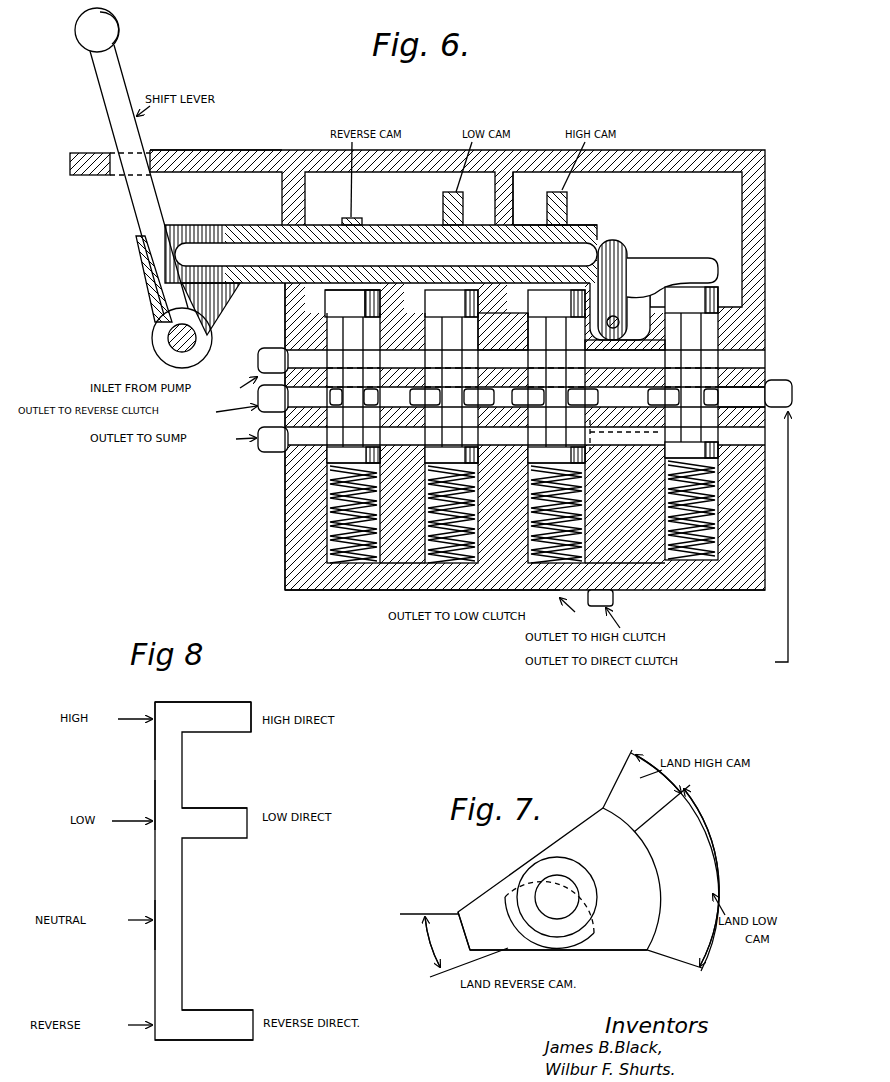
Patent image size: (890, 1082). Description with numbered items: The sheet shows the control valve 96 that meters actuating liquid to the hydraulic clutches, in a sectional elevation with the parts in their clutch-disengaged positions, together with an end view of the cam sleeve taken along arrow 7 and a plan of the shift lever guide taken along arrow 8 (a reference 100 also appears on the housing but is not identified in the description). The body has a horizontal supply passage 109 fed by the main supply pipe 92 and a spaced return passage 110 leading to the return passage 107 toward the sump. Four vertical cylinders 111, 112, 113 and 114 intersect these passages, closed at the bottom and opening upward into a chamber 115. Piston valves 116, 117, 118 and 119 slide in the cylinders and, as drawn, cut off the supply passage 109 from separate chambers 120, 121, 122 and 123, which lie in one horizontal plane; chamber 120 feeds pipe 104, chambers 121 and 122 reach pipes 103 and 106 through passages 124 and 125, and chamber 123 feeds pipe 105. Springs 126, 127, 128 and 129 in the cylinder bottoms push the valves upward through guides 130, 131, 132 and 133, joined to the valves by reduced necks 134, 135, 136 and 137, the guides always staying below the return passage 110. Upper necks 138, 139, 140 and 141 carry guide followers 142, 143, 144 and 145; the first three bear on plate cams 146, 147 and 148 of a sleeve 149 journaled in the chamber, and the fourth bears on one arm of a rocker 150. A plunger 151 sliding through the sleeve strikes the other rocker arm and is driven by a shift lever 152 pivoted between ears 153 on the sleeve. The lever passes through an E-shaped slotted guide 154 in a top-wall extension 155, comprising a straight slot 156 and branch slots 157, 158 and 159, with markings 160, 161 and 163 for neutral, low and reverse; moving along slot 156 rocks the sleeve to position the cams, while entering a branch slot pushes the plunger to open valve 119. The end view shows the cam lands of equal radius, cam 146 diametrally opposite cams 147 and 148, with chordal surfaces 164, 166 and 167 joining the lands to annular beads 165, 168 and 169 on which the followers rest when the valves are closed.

In FIG. 6, the arrow 7 is at (618, 226).
In FIG. 6, the arrow 8 is at (188, 150).
In FIG. 6, the main supply pipe 92 is at (268, 348).
In FIG. 6, the control valve 96 is at (600, 114).
In FIG. 6, the valve housing 100 is at (708, 147).
In FIG. 6, the pipe 103 is at (490, 594).
In FIG. 6, the pipe 104 is at (258, 400).
In FIG. 6, the pipe 105 is at (782, 380).
In FIG. 6, the pipe 106 is at (616, 600).
In FIG. 6, the return passage 107 is at (260, 452).
In FIG. 6, the supply passage 109 is at (525, 359).
In FIG. 6, the return passage 110 is at (525, 436).
In FIG. 6, the cylinder 111 is at (328, 518).
In FIG. 6, the cylinder 112 is at (402, 590).
In FIG. 6, the cylinder 113 is at (540, 563).
In FIG. 6, the cylinder 114 is at (752, 592).
In FIG. 6, the chamber 115 is at (627, 239).
In FIG. 6, the piston valve 116 is at (353, 377).
In FIG. 6, the piston valve 117 is at (451, 377).
In FIG. 6, the piston valve 118 is at (556, 377).
In FIG. 6, the piston valve 119 is at (691, 377).
In FIG. 6, the chamber 120 is at (525, 397).
In FIG. 6, the chamber 121 is at (488, 378).
In FIG. 6, the chamber 122 is at (625, 352).
In FIG. 6, the chamber 123 is at (741, 397).
In FIG. 6, the passage 124 is at (452, 563).
In FIG. 6, the passage 125 is at (608, 433).
In FIG. 6, the spring 126 is at (300, 557).
In FIG. 6, the spring 127 is at (352, 592).
In FIG. 6, the spring 128 is at (575, 592).
In FIG. 6, the spring 129 is at (712, 545).
In FIG. 6, the guide 130 is at (353, 455).
In FIG. 6, the guide 131 is at (451, 455).
In FIG. 6, the guide 132 is at (556, 455).
In FIG. 6, the guide 133 is at (691, 450).
In FIG. 6, the neck 134 is at (354, 404).
In FIG. 6, the neck 135 is at (452, 404).
In FIG. 6, the neck 136 is at (555, 404).
In FIG. 6, the neck 137 is at (683, 403).
In FIG. 6, the neck 138 is at (353, 388).
In FIG. 6, the neck 139 is at (451, 388).
In FIG. 6, the neck 140 is at (556, 388).
In FIG. 6, the neck 141 is at (691, 385).
In FIG. 6, the guide follower 142 is at (352, 303).
In FIG. 6, the guide follower 143 is at (451, 303).
In FIG. 6, the guide follower 144 is at (556, 303).
In FIG. 6, the guide follower 145 is at (691, 300).
In FIG. 6, the plate cam 146 is at (352, 222).
In FIG. 7, the plate cam 146 is at (456, 912).
In FIG. 6, the plate cam 147 is at (396, 262).
In FIG. 7, the plate cam 147 is at (662, 866).
In FIG. 6, the plate cam 148 is at (566, 198).
In FIG. 7, the plate cam 148 is at (596, 816).
In FIG. 6, the sleeve 149 is at (313, 226).
In FIG. 7, the sleeve 149 is at (490, 892).
In FIG. 6, the rocker 150 is at (660, 260).
In FIG. 6, the plunger 151 is at (386, 254).
In FIG. 7, the plunger 151 is at (546, 882).
In FIG. 6, the shift lever 152 is at (140, 230).
In FIG. 8, the shift lever 152 is at (152, 733).
In FIG. 6, the ears 153 is at (135, 288).
In FIG. 6, the slotted guide 154 is at (106, 175).
In FIG. 8, the slotted guide 154 is at (150, 704).
In FIG. 6, the extension 155 is at (80, 152).
In FIG. 8, the straight slot 156 is at (155, 862).
In FIG. 8, the slot 157 is at (210, 808).
In FIG. 8, the slot 158 is at (232, 696).
In FIG. 8, the slot 159 is at (207, 1010).
In FIG. 8, the neutral marking 160 is at (155, 926).
In FIG. 8, the low marking 161 is at (155, 815).
In FIG. 8, the reverse marking 163 is at (155, 1038).
In FIG. 7, the chordal surfaces 164 is at (522, 950).
In FIG. 6, the annular bead 165 is at (372, 300).
In FIG. 7, the chordal surface 166 is at (612, 947).
In FIG. 7, the chordal surface 167 is at (640, 840).
In FIG. 6, the annular bead 168 is at (362, 286).
In FIG. 6, the annular bead 169 is at (620, 290).
In FIG. 7, the annular bead 169 is at (598, 934).